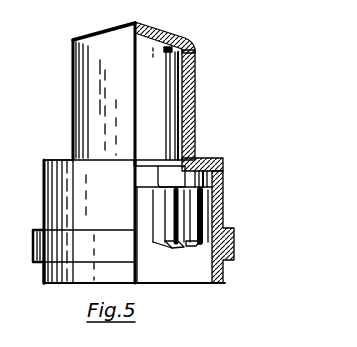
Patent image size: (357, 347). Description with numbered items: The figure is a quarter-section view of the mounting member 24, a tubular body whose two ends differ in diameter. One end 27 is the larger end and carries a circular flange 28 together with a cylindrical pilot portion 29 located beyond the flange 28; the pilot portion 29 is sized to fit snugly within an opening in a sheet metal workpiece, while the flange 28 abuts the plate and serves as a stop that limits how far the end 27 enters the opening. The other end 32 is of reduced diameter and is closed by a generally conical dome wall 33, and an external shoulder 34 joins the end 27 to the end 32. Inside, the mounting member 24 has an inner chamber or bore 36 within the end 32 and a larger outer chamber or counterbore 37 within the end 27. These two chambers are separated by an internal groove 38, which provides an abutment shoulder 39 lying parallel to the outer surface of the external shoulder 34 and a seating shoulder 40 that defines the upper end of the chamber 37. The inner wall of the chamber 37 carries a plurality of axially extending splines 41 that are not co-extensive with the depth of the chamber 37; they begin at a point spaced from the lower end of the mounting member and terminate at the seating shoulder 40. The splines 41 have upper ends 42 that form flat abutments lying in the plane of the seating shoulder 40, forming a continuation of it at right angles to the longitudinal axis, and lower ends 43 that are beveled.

The mounting member 24 is at (72, 98).
The one end 27 is at (44, 198).
The circular flange 28 is at (33, 247).
The cylindrical pilot portion 29 is at (44, 278).
The other end 32 is at (196, 82).
The conical dome wall 33 is at (163, 34).
The external shoulder 34 is at (60, 154).
The inner chamber 36 is at (160, 81).
The outer chamber 37 is at (157, 271).
The internal groove 38 is at (218, 169).
The abutment shoulder 39 is at (188, 171).
The seating shoulder 40 is at (212, 181).
The splines 41 is at (166, 211).
The upper ends 42 is at (151, 158).
The lower ends 43 is at (196, 245).